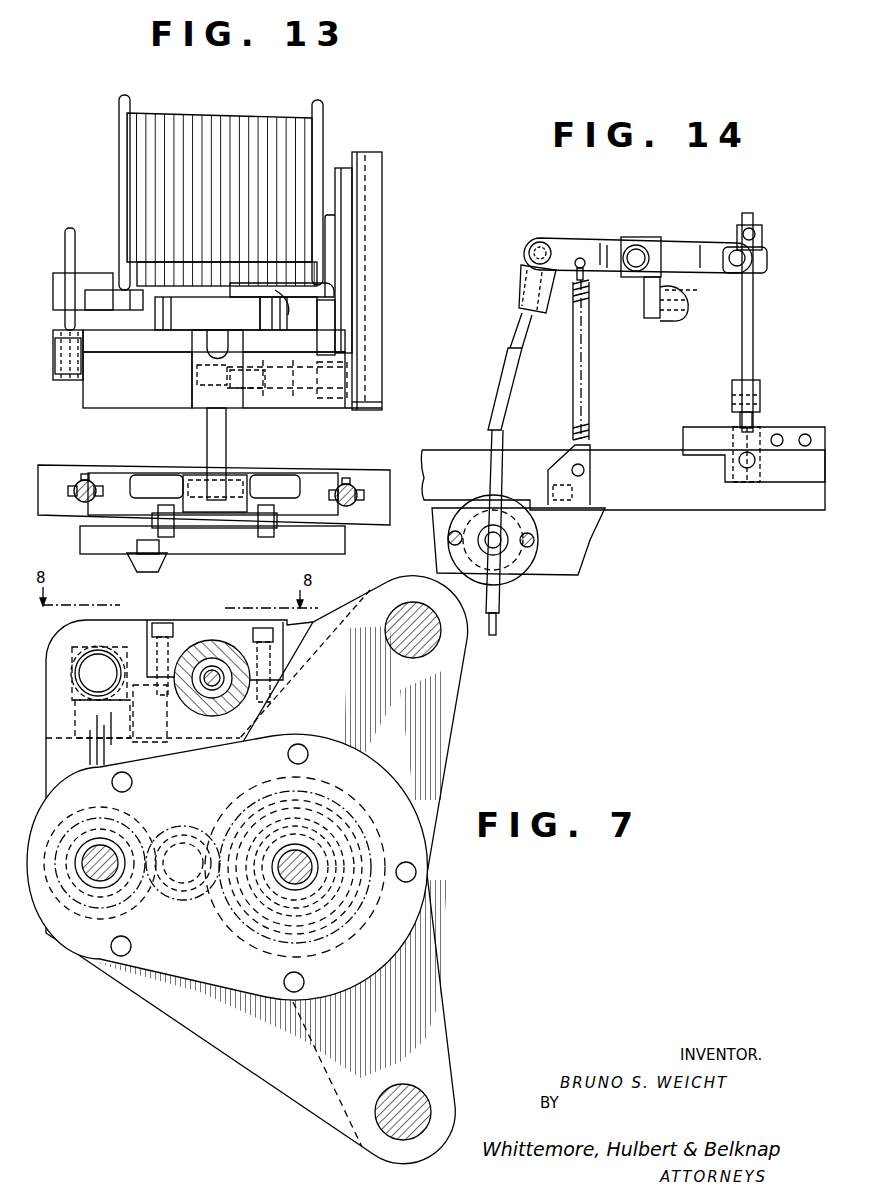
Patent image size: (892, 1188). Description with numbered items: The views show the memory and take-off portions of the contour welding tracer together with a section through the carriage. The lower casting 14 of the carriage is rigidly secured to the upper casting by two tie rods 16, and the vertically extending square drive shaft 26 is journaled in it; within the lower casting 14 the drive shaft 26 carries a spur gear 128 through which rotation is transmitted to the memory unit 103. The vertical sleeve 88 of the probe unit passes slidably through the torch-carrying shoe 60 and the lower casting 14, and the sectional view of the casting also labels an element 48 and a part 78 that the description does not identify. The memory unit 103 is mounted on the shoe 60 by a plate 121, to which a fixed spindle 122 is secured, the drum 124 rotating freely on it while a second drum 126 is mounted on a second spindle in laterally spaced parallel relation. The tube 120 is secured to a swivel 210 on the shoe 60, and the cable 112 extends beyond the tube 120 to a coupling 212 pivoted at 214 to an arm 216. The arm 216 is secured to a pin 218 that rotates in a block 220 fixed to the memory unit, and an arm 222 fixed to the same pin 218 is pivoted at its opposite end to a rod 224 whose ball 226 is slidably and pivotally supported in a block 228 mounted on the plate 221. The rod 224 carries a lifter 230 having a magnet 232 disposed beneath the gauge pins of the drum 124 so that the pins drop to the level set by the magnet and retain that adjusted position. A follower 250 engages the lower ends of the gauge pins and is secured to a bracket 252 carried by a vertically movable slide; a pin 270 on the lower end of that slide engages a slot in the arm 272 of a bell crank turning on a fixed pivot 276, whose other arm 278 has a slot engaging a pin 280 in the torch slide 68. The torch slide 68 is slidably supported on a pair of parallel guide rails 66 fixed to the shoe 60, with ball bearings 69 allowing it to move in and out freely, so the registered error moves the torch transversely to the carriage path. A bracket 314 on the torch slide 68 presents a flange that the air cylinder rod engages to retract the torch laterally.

In FIG. 13, the memory unit 103 is at (100, 140).
In FIG. 13, the drum 124 is at (264, 128).
In FIG. 7, the drum 124 is at (190, 912).
In FIG. 13, the spur gear 128 is at (125, 96).
In FIG. 7, the spur gear 128 is at (267, 826).
In FIG. 13, the rod 224 is at (70, 241).
In FIG. 14, the rod 224 is at (752, 312).
In FIG. 13, the lifter 230 is at (93, 282).
In FIG. 14, the lifter 230 is at (758, 386).
In FIG. 13, the magnet 232 is at (121, 300).
In FIG. 14, the magnet 232 is at (734, 400).
In FIG. 13, the ball 226 is at (53, 348).
In FIG. 14, the ball 226 is at (748, 490).
In FIG. 13, the block 228 is at (65, 357).
In FIG. 14, the block 228 is at (786, 432).
In FIG. 13, the plate 121 is at (96, 390).
In FIG. 13, the follower 250 is at (248, 314).
In FIG. 13, the bracket 252 is at (282, 319).
In FIG. 13, the arm 272 is at (324, 413).
In FIG. 13, the pin 270 is at (342, 410).
In FIG. 13, the fixed pivot 276 is at (268, 396).
In FIG. 13, the arm 278 is at (209, 440).
In FIG. 13, the guide rails 66 is at (56, 476).
In FIG. 13, the torch slide 68 is at (316, 481).
In FIG. 13, the ball bearings 69 is at (93, 485).
In FIG. 13, the pin 280 is at (234, 493).
In FIG. 13, the bracket 314 is at (228, 548).
In FIG. 14, the pivot 214 is at (532, 251).
In FIG. 14, the arm 216 is at (587, 245).
In FIG. 14, the pin 218 is at (638, 246).
In FIG. 14, the arm 222 is at (690, 250).
In FIG. 14, the coupling 212 is at (522, 281).
In FIG. 14, the cable 112 is at (518, 330).
In FIG. 14, the tube 120 is at (508, 410).
In FIG. 14, the block 220 is at (660, 325).
In FIG. 14, the plate 221 is at (681, 500).
In FIG. 14, the shoe 60 is at (575, 557).
In FIG. 14, the swivel 210 is at (500, 548).
In FIG. 7, the lower casting 14 is at (408, 846).
In FIG. 7, the tie rods 16 is at (425, 640).
In FIG. 7, the bushing 78 is at (212, 638).
In FIG. 7, the sleeve 88 is at (223, 655).
In FIG. 7, the bracket 48 is at (150, 742).
In FIG. 7, the drive shaft 26 is at (88, 850).
In FIG. 7, the second drum 126 is at (293, 877).
In FIG. 7, the fixed spindle 122 is at (80, 893).